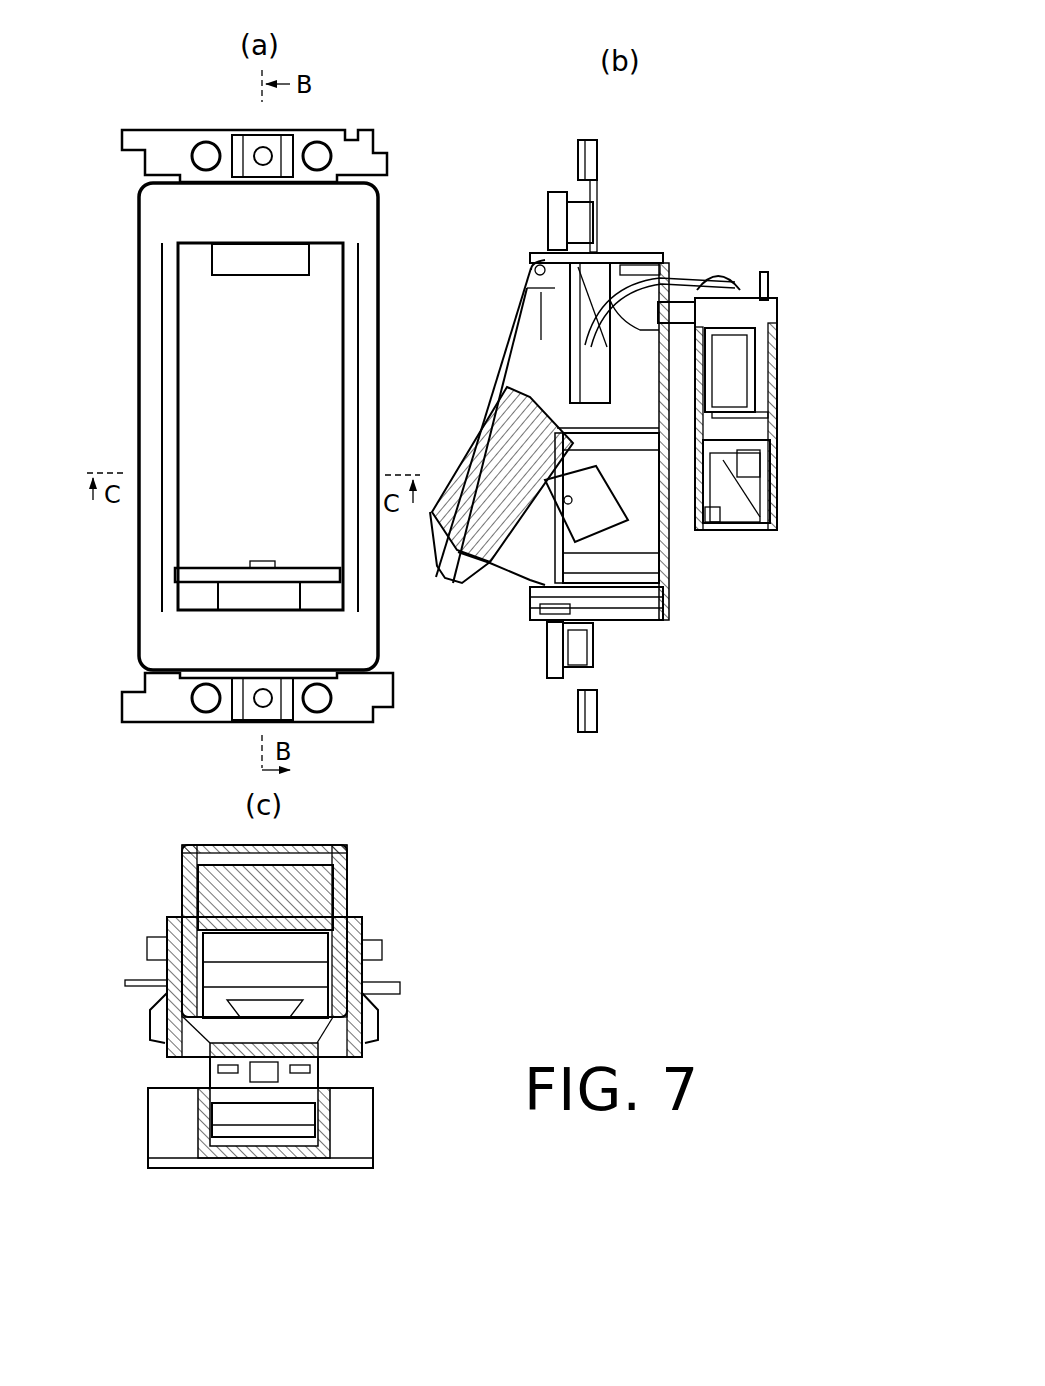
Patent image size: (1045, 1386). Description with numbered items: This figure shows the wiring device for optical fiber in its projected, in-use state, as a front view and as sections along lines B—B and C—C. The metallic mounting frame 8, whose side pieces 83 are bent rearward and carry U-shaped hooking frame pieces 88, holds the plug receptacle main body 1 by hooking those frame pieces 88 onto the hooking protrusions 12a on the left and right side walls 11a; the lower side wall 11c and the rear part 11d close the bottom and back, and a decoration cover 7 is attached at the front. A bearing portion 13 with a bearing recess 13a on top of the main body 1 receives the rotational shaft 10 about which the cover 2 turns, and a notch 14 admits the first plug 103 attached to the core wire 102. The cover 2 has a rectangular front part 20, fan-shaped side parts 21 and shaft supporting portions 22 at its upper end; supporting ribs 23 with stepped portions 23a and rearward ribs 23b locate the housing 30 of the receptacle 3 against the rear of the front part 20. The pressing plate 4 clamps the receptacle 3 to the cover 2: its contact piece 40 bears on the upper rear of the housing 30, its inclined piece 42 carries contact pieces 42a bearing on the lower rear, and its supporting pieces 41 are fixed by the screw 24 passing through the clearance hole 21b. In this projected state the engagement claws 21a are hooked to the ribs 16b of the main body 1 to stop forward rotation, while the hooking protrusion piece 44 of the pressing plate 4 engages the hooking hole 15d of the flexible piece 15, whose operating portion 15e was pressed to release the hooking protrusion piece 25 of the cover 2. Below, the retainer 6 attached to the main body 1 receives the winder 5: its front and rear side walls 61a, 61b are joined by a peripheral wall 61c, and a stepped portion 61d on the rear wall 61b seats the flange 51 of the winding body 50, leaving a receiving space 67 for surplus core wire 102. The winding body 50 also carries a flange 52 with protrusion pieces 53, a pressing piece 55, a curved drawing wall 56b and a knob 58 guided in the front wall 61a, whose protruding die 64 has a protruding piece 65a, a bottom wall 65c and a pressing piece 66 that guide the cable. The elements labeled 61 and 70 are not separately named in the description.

The plug receptacle main body 1 is at (168, 372).
The cover 2 is at (200, 290).
The receptacle 3 is at (485, 565).
The pressing plate 4 is at (462, 513).
The winder 5 is at (778, 292).
The retainer 6 is at (783, 412).
The decoration cover 7 is at (200, 652).
The mounting frame 8 is at (380, 125).
The rotational shaft 10 is at (530, 258).
The side walls 11a is at (628, 255).
The lower side wall 11c is at (637, 605).
The rear part 11d is at (660, 580).
The hooking protrusions 12a is at (162, 1033).
The bearing portion 13 is at (275, 262).
The bearing recess 13a is at (535, 272).
The notch 14 is at (600, 255).
The flexible piece 15 is at (290, 595).
The hooking hole 15d is at (548, 592).
The operating portion 15e is at (240, 600).
The ribs 16b is at (367, 973).
The front part 20 is at (318, 370).
The side parts 21 is at (500, 350).
The engagement claw 21a is at (148, 1038).
The clearance hole 21b is at (398, 985).
The shaft supporting portions 22 is at (200, 248).
The supporting ribs 23 is at (502, 397).
The stepped portion 23a is at (467, 463).
The ribs 23b is at (455, 580).
The screw 24 is at (165, 940).
The hooking protrusion piece 25 is at (222, 582).
The housing 30 is at (452, 545).
The contact piece 40 is at (625, 482).
The supporting pieces 41 is at (660, 558).
The inclined piece 42 is at (660, 610).
The contact pieces 42a is at (613, 622).
The hooking protrusion piece 44 is at (545, 590).
The winding body 50 is at (768, 272).
The flange 51 is at (770, 273).
The flange 52 is at (770, 497).
The protrusion pieces 53 is at (770, 518).
The pressing piece 55 is at (688, 275).
The drawing wall 56b is at (713, 275).
The knob 58 is at (710, 362).
The terminal housing 61 is at (163, 1123).
The front side wall 61a is at (710, 528).
The rear side wall 61b is at (777, 363).
The peripheral wall 61c is at (753, 533).
The stepped portion 61d is at (770, 480).
The protruding die 64 is at (673, 395).
The protruding piece 65a is at (650, 255).
The bottom wall 65c is at (668, 268).
The pressing piece 66 is at (605, 255).
The receiving space 67 is at (732, 530).
The frame plate 70 is at (360, 660).
The side pieces 83 is at (160, 953).
The hooking frame pieces 88 is at (145, 1022).
The core wire 102 is at (547, 240).
The first plug 103 is at (525, 365).